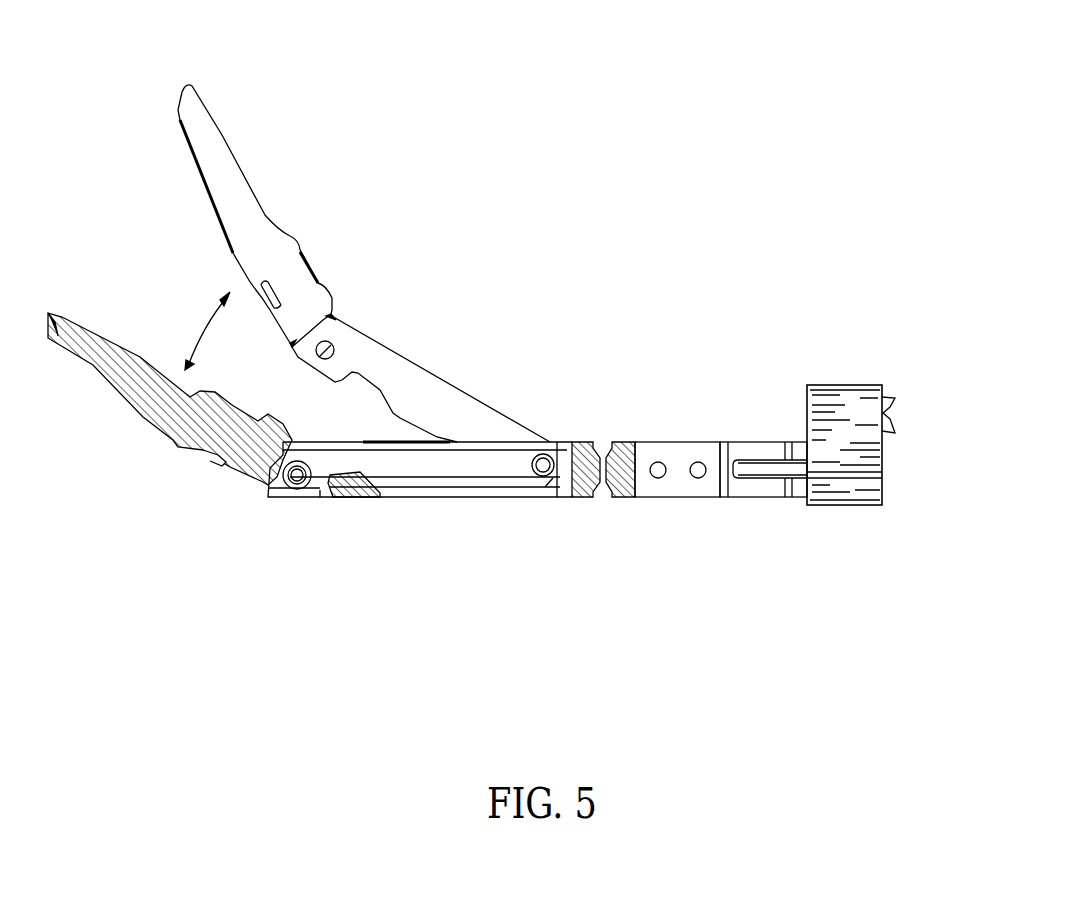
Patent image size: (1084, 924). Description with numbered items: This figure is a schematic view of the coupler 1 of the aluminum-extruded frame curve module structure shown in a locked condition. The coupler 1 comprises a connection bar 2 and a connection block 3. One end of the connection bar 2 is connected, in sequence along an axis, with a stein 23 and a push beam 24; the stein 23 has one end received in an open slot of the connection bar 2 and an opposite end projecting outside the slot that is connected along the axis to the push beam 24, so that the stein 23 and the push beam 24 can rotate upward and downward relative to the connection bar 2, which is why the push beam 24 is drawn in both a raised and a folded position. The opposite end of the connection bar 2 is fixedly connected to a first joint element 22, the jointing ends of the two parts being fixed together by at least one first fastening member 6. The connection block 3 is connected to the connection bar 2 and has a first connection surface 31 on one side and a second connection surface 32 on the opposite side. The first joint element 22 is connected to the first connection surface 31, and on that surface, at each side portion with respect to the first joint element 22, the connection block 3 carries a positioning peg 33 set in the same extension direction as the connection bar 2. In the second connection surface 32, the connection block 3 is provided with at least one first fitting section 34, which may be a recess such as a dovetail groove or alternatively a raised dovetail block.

The coupler 1 is at (528, 322).
The connection bar 2 is at (580, 440).
The first joint element 22 is at (707, 440).
The stein 23 is at (426, 402).
The push beam 24 is at (227, 157).
The connection block 3 is at (847, 383).
The first connection surface 31 is at (807, 422).
The second connection surface 32 is at (883, 467).
The positioning peg 33 is at (768, 478).
The first fitting section 34 is at (897, 420).
The first fastening member 6 is at (697, 478).